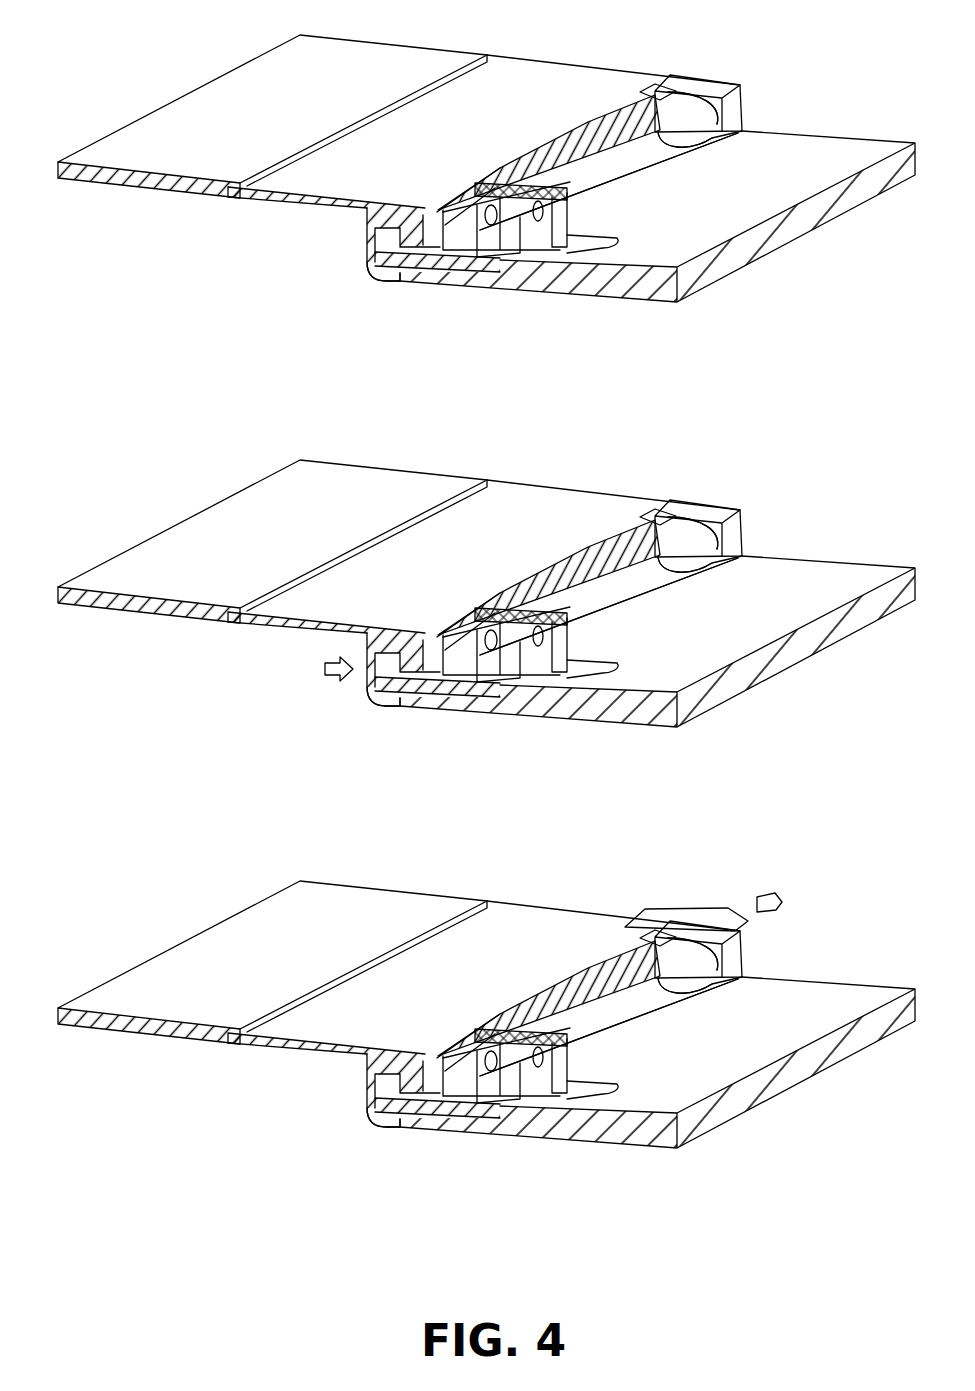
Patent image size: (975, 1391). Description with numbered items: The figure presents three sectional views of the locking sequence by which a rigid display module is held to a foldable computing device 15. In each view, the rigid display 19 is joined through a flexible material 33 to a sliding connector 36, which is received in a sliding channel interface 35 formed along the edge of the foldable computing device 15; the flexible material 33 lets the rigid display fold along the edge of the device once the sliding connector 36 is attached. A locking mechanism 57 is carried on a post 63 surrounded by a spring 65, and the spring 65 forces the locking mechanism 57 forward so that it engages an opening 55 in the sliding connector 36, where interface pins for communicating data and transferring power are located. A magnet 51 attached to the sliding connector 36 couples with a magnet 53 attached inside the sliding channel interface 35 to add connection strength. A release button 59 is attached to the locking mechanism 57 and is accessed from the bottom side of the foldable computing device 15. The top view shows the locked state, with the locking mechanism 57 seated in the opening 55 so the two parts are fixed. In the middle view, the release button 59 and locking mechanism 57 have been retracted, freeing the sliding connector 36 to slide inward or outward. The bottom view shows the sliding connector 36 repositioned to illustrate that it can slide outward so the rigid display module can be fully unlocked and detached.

The foldable computing device 15 is at (848, 142).
The rigid display 19 is at (332, 47).
The flexible material 33 is at (555, 77).
The sliding channel interface 35 is at (677, 93).
The sliding connector 36 is at (443, 257).
The magnet 51 is at (640, 90).
The magnet 53 is at (710, 140).
The opening 55 is at (440, 207).
The locking mechanism 57 is at (473, 237).
The release button 59 is at (368, 247).
The post 63 is at (555, 210).
The spring 65 is at (567, 193).